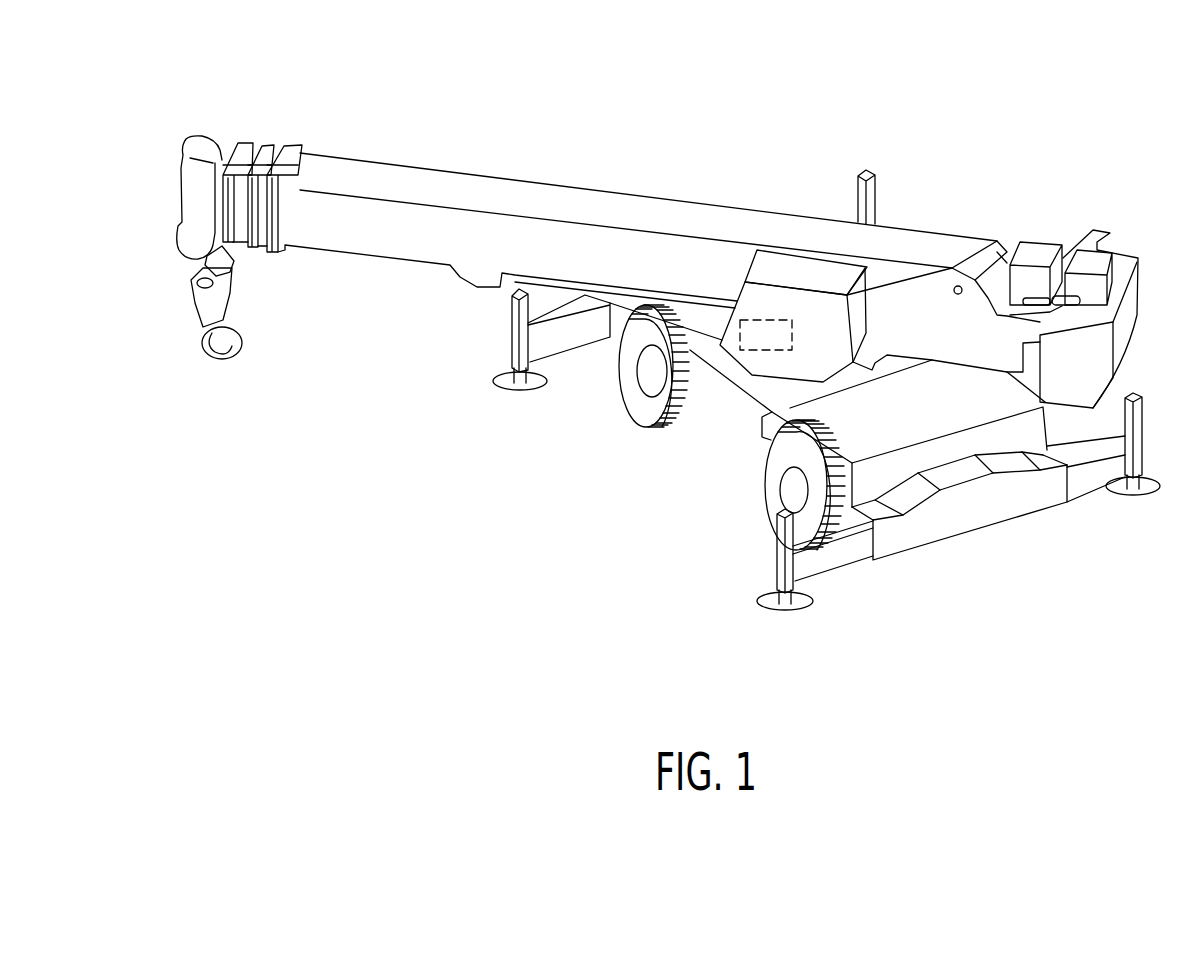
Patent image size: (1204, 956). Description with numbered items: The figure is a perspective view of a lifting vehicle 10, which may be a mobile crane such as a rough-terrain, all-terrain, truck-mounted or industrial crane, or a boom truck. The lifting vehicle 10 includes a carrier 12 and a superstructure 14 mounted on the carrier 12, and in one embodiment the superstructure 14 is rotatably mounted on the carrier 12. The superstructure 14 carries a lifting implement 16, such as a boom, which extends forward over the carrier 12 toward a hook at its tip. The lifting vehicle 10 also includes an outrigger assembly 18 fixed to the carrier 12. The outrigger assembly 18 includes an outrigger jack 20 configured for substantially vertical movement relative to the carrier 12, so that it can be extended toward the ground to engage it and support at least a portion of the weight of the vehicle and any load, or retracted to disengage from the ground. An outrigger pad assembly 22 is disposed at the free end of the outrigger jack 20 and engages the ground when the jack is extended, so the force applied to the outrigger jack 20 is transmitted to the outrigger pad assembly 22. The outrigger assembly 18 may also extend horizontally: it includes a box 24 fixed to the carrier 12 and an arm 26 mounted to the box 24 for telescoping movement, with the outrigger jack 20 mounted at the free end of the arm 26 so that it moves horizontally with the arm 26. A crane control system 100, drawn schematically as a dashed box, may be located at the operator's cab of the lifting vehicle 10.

The lifting vehicle 10 is at (778, 76).
The carrier 12 is at (743, 443).
The superstructure 14 is at (970, 252).
The lifting implement 16 is at (500, 183).
The outrigger assembly 18 is at (1034, 530).
The outrigger jack 20 is at (778, 565).
The outrigger pad assembly 22 is at (789, 614).
The box 24 is at (917, 527).
The arm 26 is at (843, 555).
The crane control system 100 is at (740, 349).